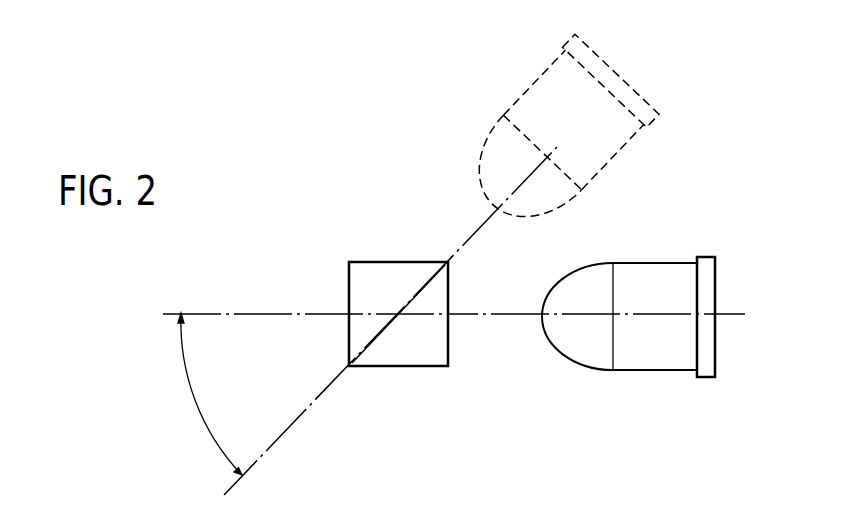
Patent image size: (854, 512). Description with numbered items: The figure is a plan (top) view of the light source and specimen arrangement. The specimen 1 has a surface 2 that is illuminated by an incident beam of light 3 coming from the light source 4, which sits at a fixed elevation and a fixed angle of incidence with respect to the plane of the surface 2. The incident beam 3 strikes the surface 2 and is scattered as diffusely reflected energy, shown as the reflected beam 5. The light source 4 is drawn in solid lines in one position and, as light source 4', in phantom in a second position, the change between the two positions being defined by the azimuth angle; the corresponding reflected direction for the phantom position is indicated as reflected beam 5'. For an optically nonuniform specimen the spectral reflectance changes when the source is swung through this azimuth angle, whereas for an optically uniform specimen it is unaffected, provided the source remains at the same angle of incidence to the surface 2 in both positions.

The specimen 1 is at (358, 261).
The surface 2 is at (414, 350).
The incident beam of light 3 is at (490, 318).
The light source 4 is at (628, 334).
The light source in phantom position 4' is at (555, 139).
The reflected beam 5 is at (306, 286).
The reflected beam for phantom source position 5' is at (390, 321).